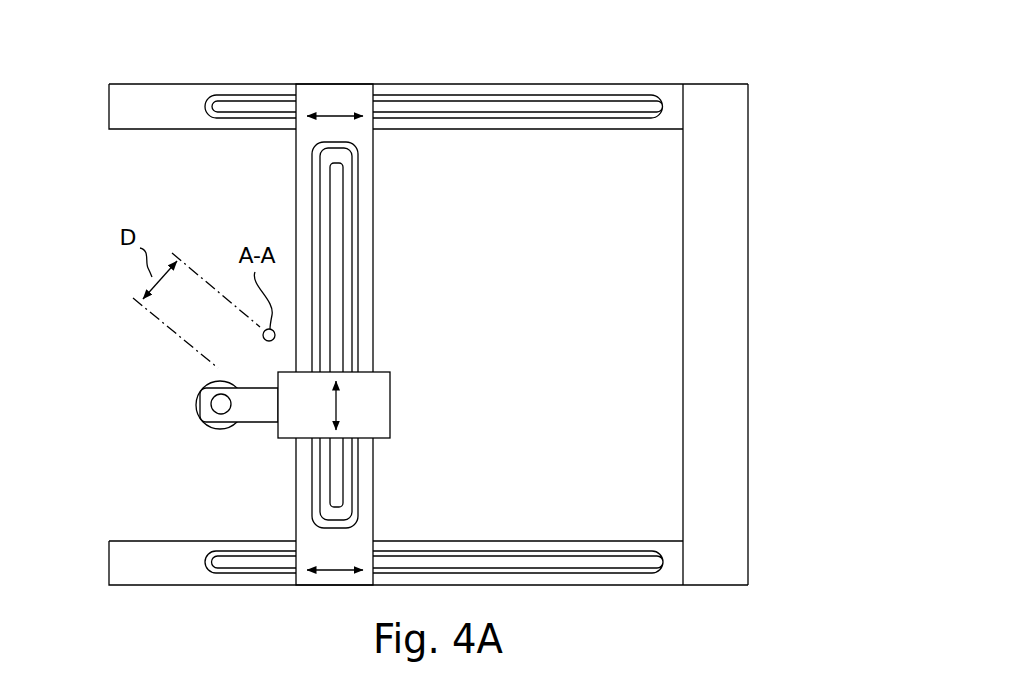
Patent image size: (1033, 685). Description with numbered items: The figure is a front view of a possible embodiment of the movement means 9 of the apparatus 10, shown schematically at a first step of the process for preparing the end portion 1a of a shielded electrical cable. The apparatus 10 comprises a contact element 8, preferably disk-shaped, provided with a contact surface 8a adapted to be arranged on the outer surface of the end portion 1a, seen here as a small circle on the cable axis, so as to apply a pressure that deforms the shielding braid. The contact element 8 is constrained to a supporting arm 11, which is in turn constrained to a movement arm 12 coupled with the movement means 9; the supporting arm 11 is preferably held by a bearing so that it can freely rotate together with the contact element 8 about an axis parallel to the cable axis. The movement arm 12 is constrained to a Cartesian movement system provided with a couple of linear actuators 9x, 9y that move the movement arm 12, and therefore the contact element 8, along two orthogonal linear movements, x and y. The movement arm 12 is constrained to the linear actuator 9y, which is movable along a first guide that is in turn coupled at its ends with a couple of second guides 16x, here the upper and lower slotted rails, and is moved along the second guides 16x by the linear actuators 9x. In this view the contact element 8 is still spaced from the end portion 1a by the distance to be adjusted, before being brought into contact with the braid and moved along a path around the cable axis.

The end portion 1a is at (261, 340).
The contact element 8 is at (179, 434).
The contact surface 8a is at (198, 382).
The movement means 9 is at (362, 325).
The linear actuator 9x is at (453, 84).
The linear actuator 9y is at (392, 408).
The apparatus 10 is at (773, 79).
The supporting arm 11 is at (213, 404).
The movement arm 12 is at (260, 416).
The second guide 16x is at (218, 83).